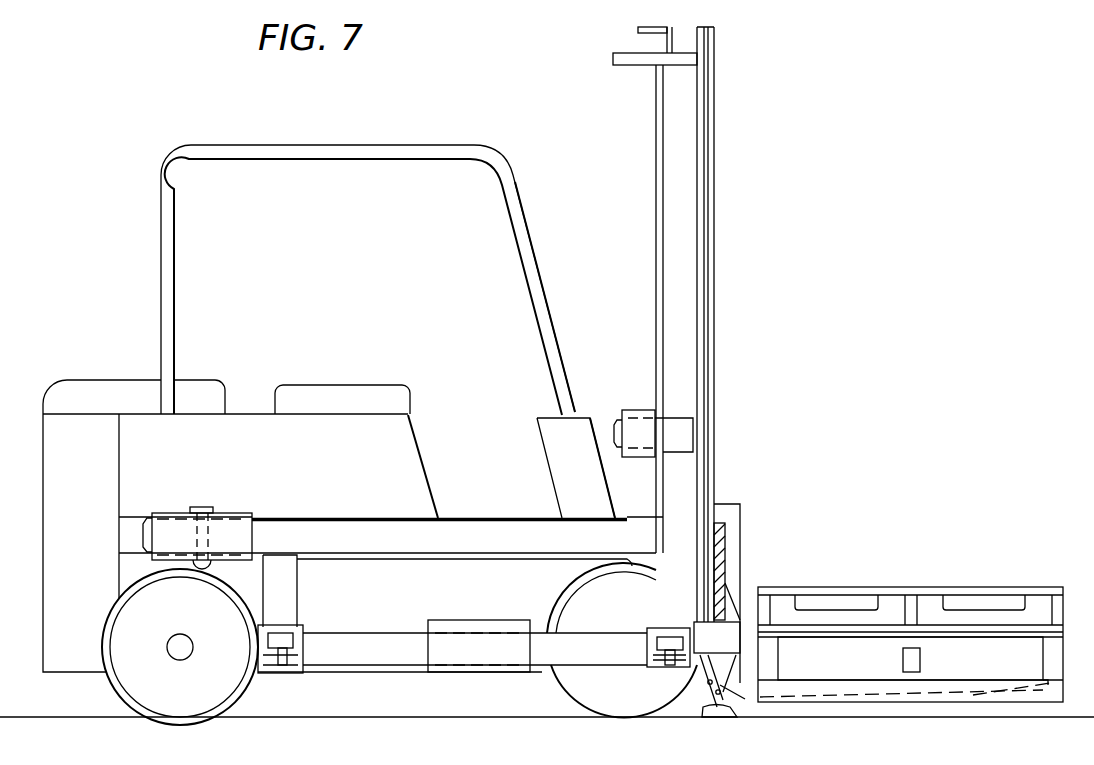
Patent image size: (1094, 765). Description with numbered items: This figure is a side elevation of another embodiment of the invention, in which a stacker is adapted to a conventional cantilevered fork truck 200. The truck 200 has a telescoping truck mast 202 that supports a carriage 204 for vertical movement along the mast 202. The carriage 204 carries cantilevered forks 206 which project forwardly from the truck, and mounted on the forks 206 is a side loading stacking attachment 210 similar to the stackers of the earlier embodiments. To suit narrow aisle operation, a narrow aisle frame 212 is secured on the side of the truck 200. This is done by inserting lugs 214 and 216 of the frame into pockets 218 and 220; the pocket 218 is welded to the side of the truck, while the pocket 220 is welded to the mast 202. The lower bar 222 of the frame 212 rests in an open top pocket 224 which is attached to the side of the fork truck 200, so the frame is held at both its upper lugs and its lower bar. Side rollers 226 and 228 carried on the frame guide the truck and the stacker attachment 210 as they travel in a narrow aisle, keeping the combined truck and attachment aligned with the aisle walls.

The cantilevered fork truck 200 is at (423, 461).
The telescoping truck mast 202 is at (656, 246).
The carriage 204 is at (741, 551).
The cantilevered forks 206 is at (725, 686).
The side loading stacking attachment 210 is at (924, 557).
The narrow aisle frame 212 is at (482, 515).
The lug 214 is at (144, 525).
The lug 216 is at (612, 425).
The pocket 218 is at (238, 512).
The pocket 220 is at (637, 410).
The lower bar 222 is at (346, 666).
The open top pocket 224 is at (482, 673).
The side roller 226 is at (293, 634).
The side roller 228 is at (663, 640).